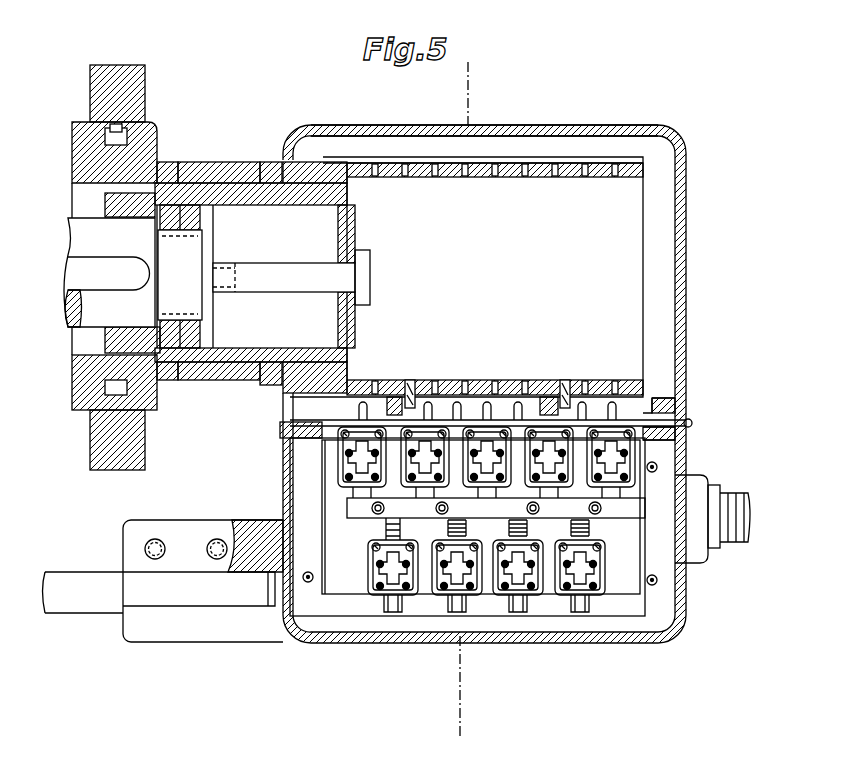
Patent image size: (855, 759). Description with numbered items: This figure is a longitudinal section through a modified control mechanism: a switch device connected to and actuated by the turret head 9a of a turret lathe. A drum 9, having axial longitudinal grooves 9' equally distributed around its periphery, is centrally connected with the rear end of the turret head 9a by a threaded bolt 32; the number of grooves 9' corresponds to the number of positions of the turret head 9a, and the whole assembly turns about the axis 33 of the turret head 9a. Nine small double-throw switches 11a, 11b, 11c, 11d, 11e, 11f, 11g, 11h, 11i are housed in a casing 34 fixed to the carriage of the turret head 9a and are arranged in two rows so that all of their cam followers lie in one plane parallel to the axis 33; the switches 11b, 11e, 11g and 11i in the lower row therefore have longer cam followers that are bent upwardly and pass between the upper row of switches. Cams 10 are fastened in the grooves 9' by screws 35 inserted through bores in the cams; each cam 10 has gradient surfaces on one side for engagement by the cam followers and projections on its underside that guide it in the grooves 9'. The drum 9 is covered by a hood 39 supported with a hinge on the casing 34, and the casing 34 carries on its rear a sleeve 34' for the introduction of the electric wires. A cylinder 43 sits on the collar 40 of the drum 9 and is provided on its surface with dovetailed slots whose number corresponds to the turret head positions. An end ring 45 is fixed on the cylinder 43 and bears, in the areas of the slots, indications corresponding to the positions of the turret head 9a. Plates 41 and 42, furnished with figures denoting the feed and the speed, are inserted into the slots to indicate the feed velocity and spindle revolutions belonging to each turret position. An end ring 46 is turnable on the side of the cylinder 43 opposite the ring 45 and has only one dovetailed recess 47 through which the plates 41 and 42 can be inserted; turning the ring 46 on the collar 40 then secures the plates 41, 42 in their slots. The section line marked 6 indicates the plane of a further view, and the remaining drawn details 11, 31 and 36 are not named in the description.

The drum 9 is at (497, 384).
The axial longitudinal grooves 9' is at (501, 251).
The turret head 9a is at (110, 138).
The section line 6 is at (475, 402).
The cams 10 is at (394, 397).
The contact bar 11 is at (613, 414).
The switch 11a is at (425, 462).
The switch 11b is at (396, 575).
The switch 11c is at (358, 457).
The switch 11d is at (553, 470).
The switch 11e is at (518, 578).
The switch 11f is at (488, 470).
The switch 11g is at (457, 578).
The switch 11h is at (610, 468).
The switch 11i is at (588, 578).
The hub flange 31 is at (143, 160).
The threaded bolt 32 is at (292, 272).
The axis 33 is at (78, 242).
The casing 34 is at (350, 559).
The sleeve 34' is at (712, 533).
The screws 35 is at (416, 388).
The winding slots 36 is at (506, 171).
The hood 39 is at (592, 128).
The collar 40 is at (232, 197).
The plates 41 is at (233, 162).
The plates 42 is at (192, 162).
The cylinder 43 is at (223, 375).
The end ring 45 is at (161, 375).
The end ring 46 is at (268, 384).
The dovetailed recess 47 is at (267, 162).